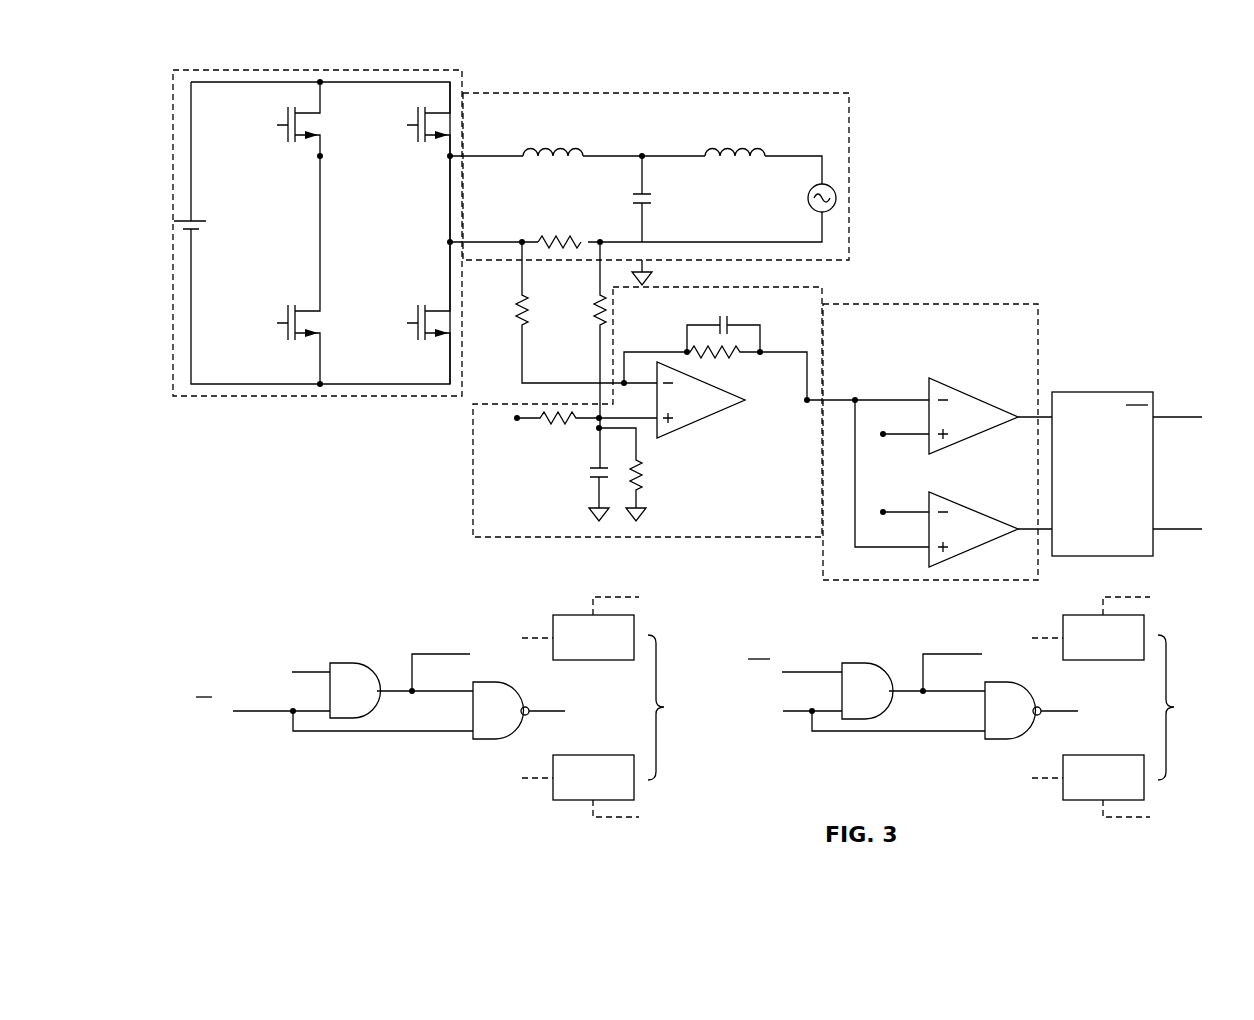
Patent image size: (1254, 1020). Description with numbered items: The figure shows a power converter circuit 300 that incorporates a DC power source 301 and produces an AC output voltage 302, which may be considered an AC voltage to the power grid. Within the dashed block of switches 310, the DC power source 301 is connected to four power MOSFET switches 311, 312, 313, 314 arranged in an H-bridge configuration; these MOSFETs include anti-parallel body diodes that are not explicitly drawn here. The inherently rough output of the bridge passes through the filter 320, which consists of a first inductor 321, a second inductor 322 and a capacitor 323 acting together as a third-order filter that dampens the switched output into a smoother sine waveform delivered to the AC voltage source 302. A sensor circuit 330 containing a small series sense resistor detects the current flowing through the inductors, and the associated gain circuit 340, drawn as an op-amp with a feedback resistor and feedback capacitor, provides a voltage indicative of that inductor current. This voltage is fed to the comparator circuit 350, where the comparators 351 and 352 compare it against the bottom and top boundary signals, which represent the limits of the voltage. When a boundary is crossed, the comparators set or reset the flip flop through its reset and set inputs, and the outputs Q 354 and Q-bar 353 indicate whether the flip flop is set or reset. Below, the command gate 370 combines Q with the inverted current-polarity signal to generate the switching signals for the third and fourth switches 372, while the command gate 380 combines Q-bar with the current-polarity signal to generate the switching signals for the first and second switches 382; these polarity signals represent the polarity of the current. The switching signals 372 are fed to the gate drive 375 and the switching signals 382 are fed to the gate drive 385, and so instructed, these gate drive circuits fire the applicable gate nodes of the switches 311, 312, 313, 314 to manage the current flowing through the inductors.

The power converter circuit 300 is at (1125, 75).
The DC power source 301 is at (145, 212).
The AC power supply / AC output voltage 302 is at (836, 200).
The switches 310 is at (437, 63).
The power MOSFET switch 311 is at (257, 143).
The power MOSFET switch 312 is at (386, 143).
The power MOSFET switch 313 is at (257, 310).
The power MOSFET switch 314 is at (388, 310).
The filter 320 is at (678, 90).
The inductor L1 321 is at (553, 108).
The inductor L2 322 is at (735, 108).
The capacitor C1 323 is at (646, 205).
The sensor circuit 330 is at (482, 378).
The gain circuit 340 is at (840, 318).
The comparator circuit 350 is at (836, 476).
The comparator 351 is at (975, 395).
The comparator 352 is at (975, 507).
The signal Q-bar 353 is at (1136, 396).
The signal Q 354 is at (1136, 510).
The command gate 370 is at (388, 742).
The switching signals q3-q4 372 is at (490, 640).
The gate drive 375 is at (621, 707).
The command gate 380 is at (905, 742).
The switching signals q1-q2 382 is at (1000, 640).
The gate drive 385 is at (1131, 707).